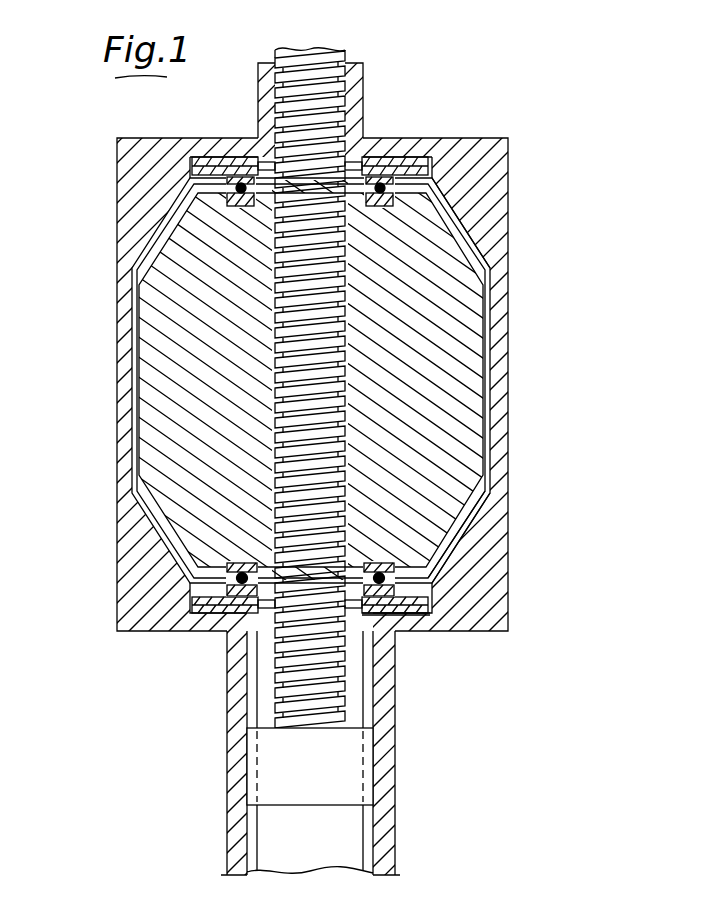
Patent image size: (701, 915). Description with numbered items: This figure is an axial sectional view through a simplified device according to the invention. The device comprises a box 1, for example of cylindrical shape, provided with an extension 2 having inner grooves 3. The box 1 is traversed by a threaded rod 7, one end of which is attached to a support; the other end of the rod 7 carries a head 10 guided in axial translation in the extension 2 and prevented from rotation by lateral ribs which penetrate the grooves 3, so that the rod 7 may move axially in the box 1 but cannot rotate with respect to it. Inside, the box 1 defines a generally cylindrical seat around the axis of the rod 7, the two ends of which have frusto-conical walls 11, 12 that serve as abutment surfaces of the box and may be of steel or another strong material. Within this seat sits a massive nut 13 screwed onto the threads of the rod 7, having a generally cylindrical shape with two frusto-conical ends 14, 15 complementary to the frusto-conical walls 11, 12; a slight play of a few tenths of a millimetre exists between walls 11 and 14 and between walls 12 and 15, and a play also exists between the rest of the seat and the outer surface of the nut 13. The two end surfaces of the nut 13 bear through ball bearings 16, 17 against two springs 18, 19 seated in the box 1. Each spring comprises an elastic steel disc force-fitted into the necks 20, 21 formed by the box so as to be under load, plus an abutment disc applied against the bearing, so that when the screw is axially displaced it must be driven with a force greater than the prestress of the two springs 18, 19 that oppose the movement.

The box 1 is at (508, 380).
The extension 2 is at (387, 833).
The inner grooves 3 is at (253, 840).
The threaded rod 7 is at (343, 110).
The head 10 is at (347, 762).
The frusto-conical wall 11 is at (472, 530).
The frusto-conical wall 12 is at (473, 233).
The nut 13 is at (468, 328).
The frusto-conical end 14 is at (468, 503).
The frusto-conical end 15 is at (132, 283).
The ball bearing 16 is at (243, 562).
The ball bearing 17 is at (397, 202).
The spring 18 is at (416, 614).
The spring 19 is at (420, 157).
The neck 20 is at (430, 603).
The neck 21 is at (208, 157).